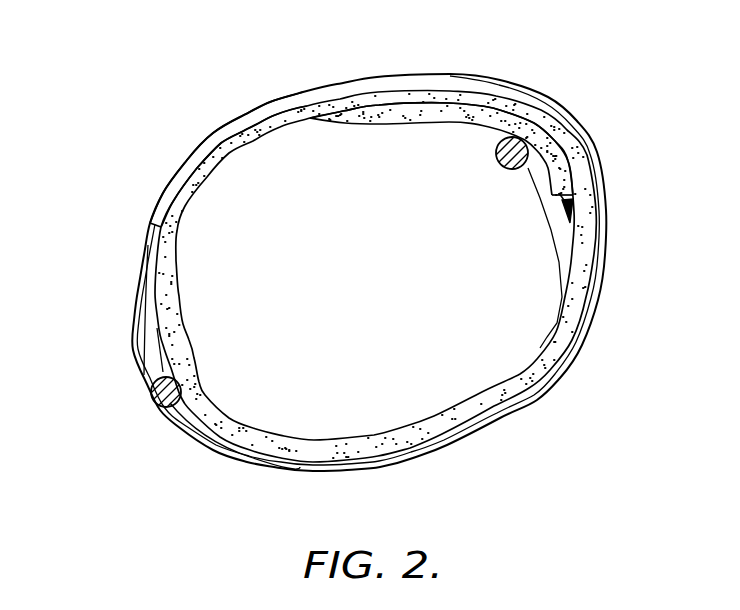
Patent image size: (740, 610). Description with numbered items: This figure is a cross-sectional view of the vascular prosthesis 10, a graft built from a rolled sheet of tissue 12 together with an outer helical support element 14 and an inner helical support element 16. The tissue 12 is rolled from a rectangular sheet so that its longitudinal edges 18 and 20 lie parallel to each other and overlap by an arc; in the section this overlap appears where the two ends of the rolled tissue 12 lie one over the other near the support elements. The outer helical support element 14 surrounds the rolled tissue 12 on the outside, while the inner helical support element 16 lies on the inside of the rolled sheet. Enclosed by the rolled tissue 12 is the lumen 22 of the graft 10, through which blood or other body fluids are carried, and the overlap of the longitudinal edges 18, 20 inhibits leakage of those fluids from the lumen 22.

The vascular prosthesis 10 is at (222, 53).
The rolled sheet of tissue 12 is at (573, 343).
The outer helical support element 14 is at (132, 343).
The inner helical support element 16 is at (537, 170).
The longitudinal edge 18 is at (150, 229).
The longitudinal edge 20 is at (580, 212).
The lumen 22 is at (381, 309).